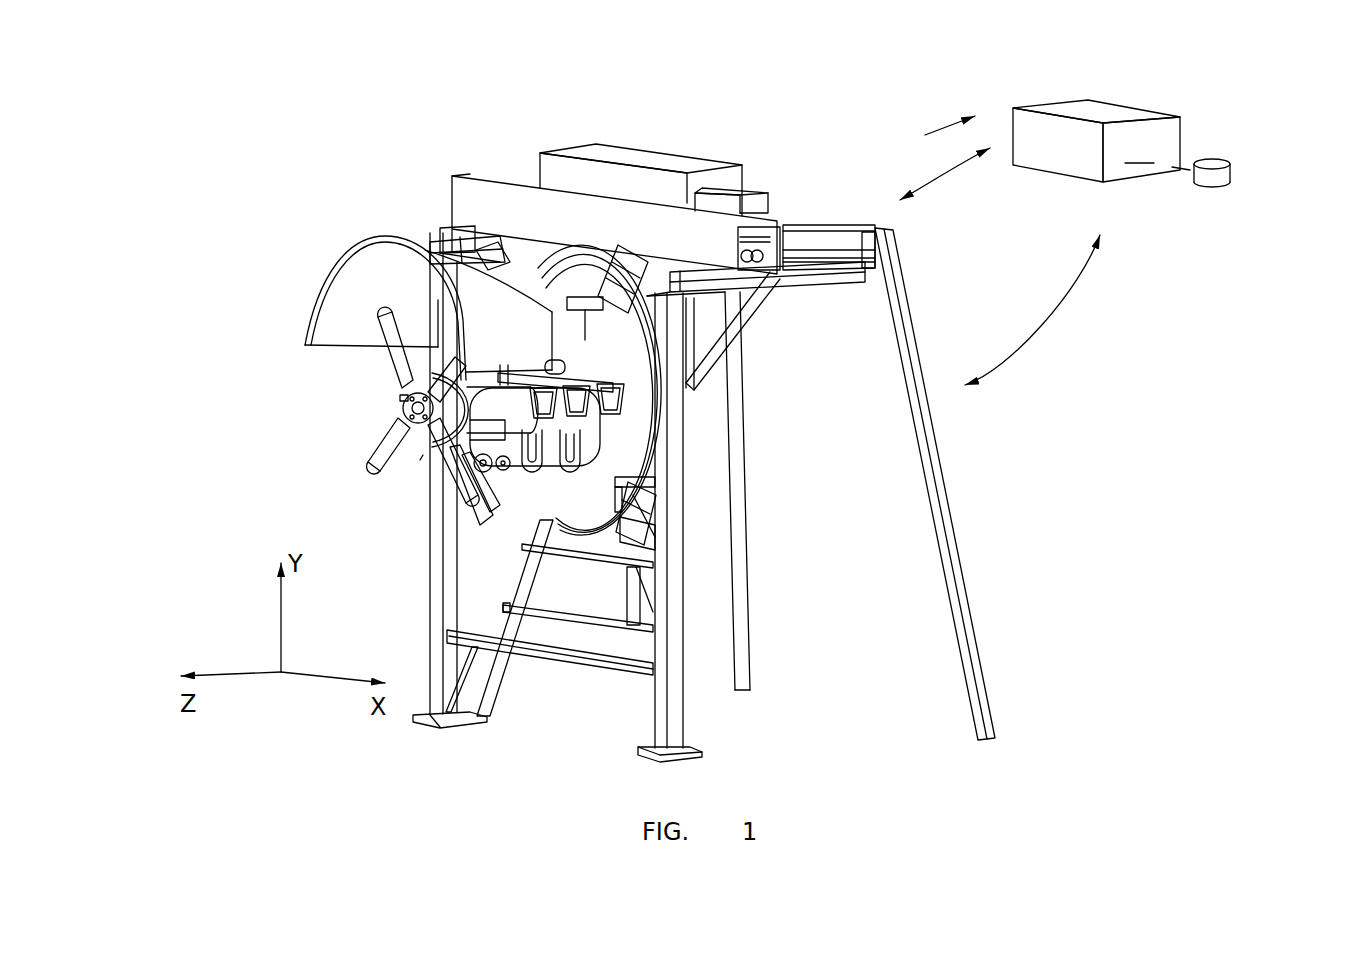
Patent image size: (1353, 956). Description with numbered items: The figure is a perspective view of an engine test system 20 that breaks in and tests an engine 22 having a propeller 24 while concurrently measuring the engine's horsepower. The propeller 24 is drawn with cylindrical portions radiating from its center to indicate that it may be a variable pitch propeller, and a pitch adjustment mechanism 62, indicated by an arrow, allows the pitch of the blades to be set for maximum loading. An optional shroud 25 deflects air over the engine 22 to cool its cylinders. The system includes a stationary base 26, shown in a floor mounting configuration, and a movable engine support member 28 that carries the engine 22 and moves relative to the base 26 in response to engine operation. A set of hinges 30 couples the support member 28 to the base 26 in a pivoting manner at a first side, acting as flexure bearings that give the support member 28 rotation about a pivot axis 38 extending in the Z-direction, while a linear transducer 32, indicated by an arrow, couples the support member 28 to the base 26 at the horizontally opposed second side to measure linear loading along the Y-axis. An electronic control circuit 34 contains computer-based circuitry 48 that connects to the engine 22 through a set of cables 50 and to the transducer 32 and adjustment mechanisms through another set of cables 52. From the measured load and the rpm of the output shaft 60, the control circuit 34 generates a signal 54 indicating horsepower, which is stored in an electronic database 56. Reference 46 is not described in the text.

The engine test system 20 is at (262, 162).
The engine 22 is at (385, 417).
The propeller 24 is at (370, 463).
The shroud 25 is at (318, 292).
The stationary base 26 is at (678, 668).
The movable engine support member 28 is at (450, 255).
The hinges 30 is at (990, 517).
The linear transducer 32 is at (463, 228).
The electronic control circuit 34 is at (1127, 173).
The pivot axis 38 is at (903, 262).
The thrust direction 46 is at (925, 135).
The computer-based circuitry 48 is at (1140, 150).
The set of cables 50 is at (1032, 311).
The set of cables 52 is at (942, 178).
The signal 54 is at (1217, 147).
The electronic database 56 is at (1208, 190).
The output shaft 60 is at (393, 397).
The pitch adjustment mechanism 62 is at (422, 457).